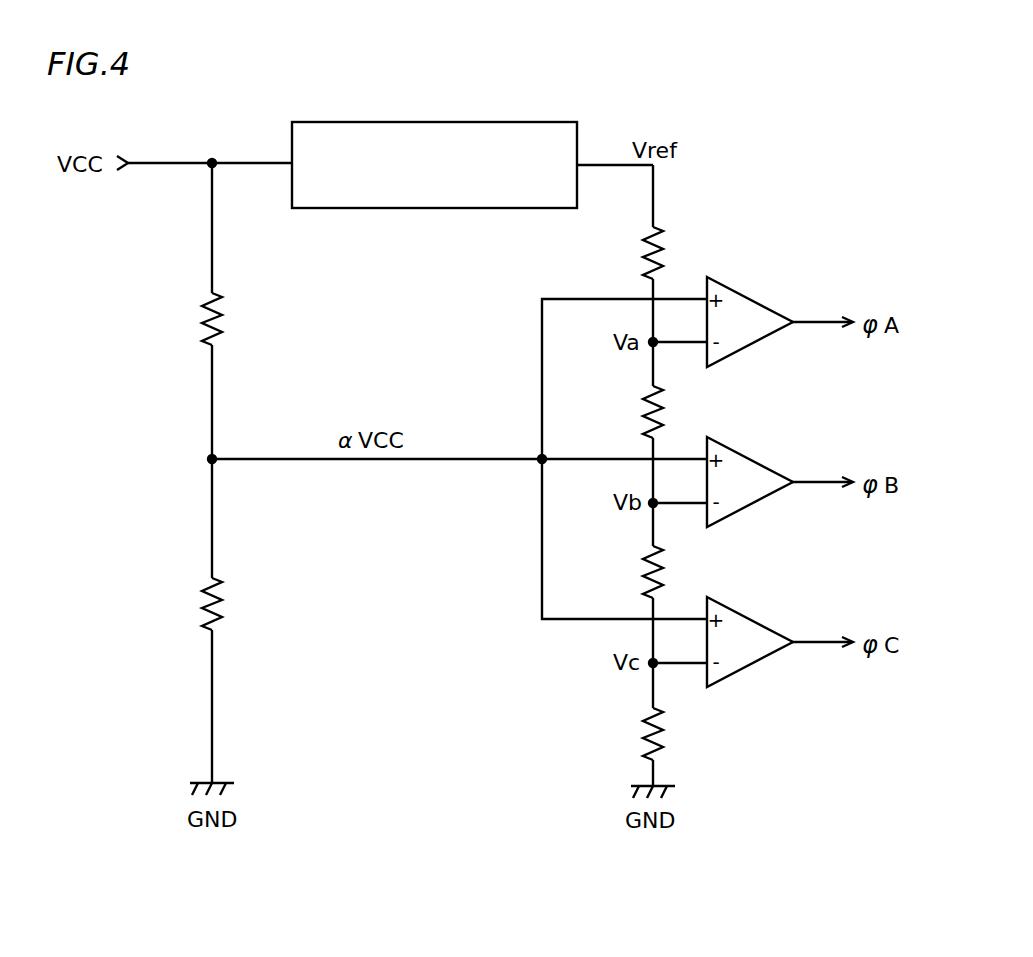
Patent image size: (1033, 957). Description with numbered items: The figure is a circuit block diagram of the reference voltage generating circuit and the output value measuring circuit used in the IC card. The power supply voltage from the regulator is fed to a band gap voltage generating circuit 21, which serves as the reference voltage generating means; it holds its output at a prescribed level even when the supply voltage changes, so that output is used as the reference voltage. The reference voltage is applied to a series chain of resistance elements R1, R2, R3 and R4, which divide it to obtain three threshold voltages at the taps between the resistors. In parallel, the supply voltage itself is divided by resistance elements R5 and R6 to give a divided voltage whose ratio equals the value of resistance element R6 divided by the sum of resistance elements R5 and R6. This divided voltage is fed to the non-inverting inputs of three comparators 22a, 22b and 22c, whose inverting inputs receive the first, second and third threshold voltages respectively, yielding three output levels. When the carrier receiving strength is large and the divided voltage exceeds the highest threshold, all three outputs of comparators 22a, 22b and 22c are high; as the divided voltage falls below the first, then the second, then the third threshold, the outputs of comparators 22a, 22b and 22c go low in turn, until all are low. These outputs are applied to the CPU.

The band gap voltage generating circuit 21 is at (402, 208).
The comparator 22a is at (745, 295).
The comparator 22b is at (745, 455).
The comparator 22c is at (745, 615).
The resistance element R1 is at (672, 247).
The resistance element R2 is at (672, 407).
The resistance element R3 is at (672, 567).
The resistance element R4 is at (672, 728).
The resistance element R5 is at (232, 313).
The resistance element R6 is at (232, 598).